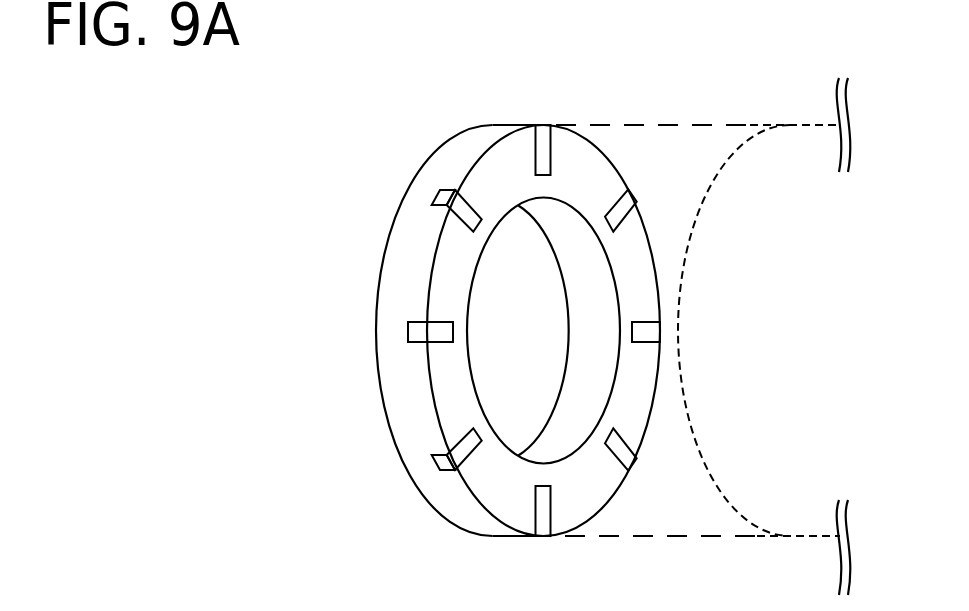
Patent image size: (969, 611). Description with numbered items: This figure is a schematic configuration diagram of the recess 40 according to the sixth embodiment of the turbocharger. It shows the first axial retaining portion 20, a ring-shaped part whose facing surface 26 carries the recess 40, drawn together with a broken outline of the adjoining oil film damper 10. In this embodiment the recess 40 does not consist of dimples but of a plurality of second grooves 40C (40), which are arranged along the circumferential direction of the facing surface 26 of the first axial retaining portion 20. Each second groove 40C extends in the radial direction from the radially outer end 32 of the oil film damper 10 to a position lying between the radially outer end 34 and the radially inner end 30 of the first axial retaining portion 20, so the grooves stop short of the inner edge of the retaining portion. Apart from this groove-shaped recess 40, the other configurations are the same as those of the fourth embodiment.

The oil film damper 10 is at (745, 525).
The first axial retaining portion 20 is at (368, 150).
The facing surface 26 is at (495, 512).
The radially inner end 30 is at (480, 373).
The radially outer end 32 is at (430, 272).
The radially outer end 34 is at (459, 330).
The recess 40 is at (457, 330).
The second groove 40C is at (436, 457).